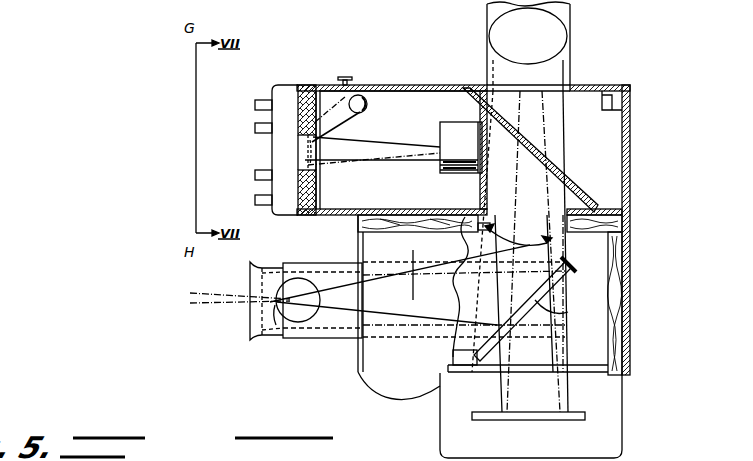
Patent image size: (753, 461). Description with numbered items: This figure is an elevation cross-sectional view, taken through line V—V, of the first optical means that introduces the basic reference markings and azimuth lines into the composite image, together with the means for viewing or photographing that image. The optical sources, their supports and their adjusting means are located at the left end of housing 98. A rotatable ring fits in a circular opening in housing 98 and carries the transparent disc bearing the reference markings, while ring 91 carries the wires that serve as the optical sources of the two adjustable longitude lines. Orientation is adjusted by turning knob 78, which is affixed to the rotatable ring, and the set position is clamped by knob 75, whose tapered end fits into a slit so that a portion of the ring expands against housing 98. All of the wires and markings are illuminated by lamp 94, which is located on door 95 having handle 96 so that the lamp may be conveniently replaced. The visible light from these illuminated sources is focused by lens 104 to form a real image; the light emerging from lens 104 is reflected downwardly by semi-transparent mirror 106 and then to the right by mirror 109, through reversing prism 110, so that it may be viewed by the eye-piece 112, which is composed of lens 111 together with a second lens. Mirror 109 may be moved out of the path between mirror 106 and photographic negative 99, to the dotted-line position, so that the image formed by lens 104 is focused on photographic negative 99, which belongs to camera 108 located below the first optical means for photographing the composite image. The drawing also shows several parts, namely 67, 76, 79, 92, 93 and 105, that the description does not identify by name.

The tube 67 is at (567, 37).
The knob 75 is at (255, 199).
The terminal pin 76 is at (255, 175).
The knob 78 is at (255, 104).
The terminal pin 79 is at (255, 128).
The ring 91 is at (305, 85).
The window 92 is at (308, 215).
The inner wall 93 is at (315, 90).
The lamp 94 is at (368, 106).
The door 95 is at (366, 86).
The handle 96 is at (348, 77).
The housing 98 is at (282, 86).
The photographic negative 99 is at (588, 414).
The lens 104 is at (454, 125).
The element 105 is at (482, 188).
The semi-transparent mirror 106 is at (505, 128).
The camera 108 is at (445, 428).
The mirror 109 is at (470, 232).
The reversing prism 110 is at (425, 340).
The lens 111 is at (278, 338).
The eye-piece 112 is at (258, 338).